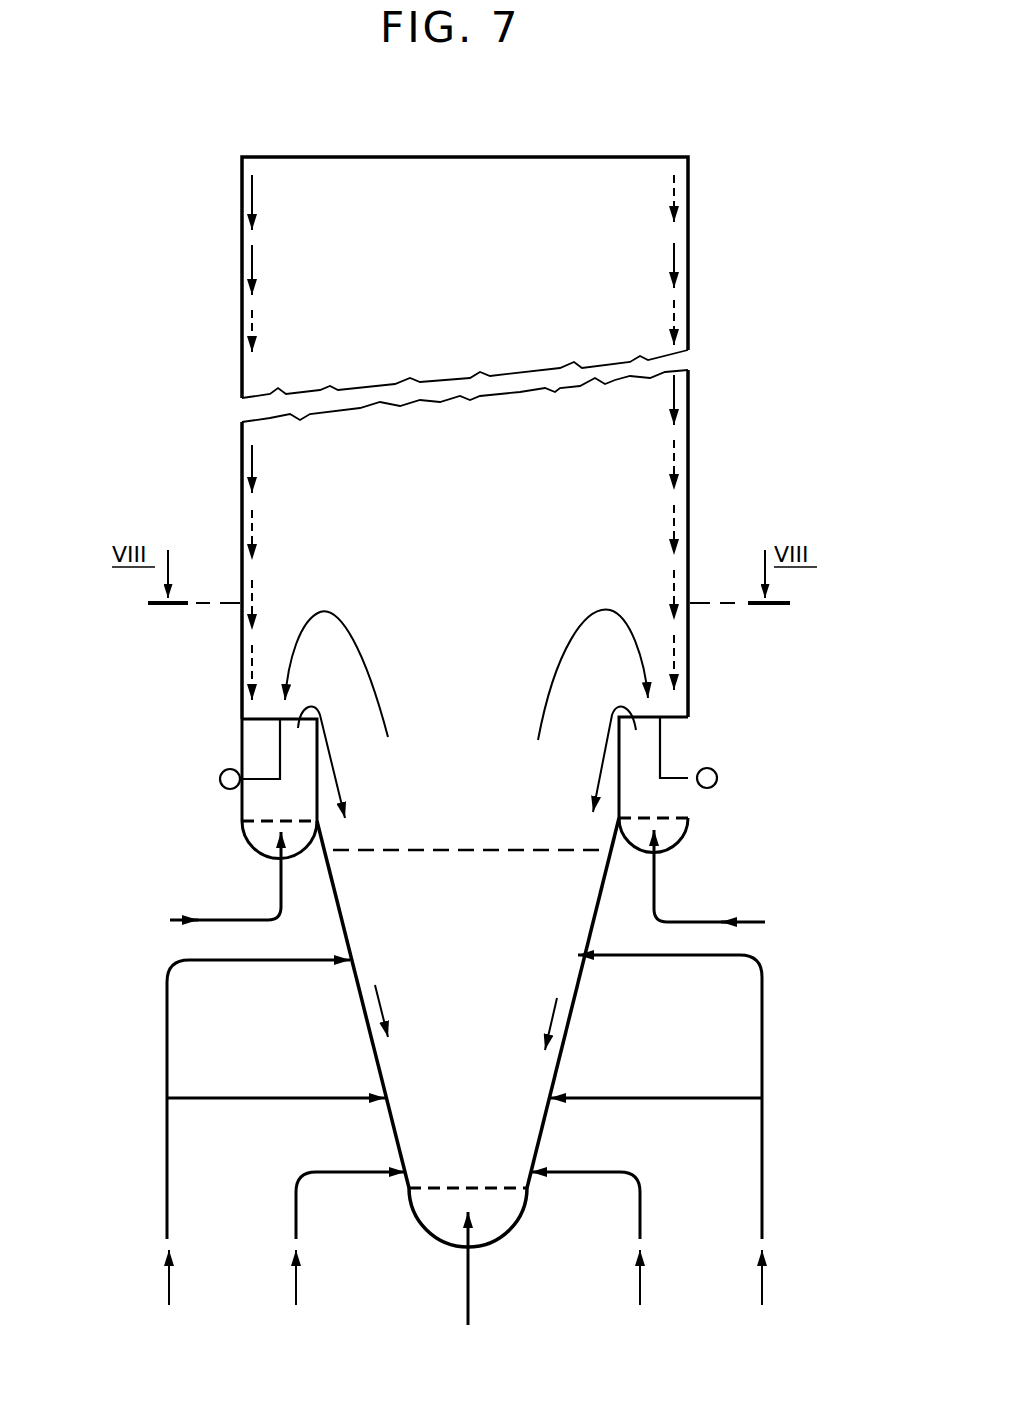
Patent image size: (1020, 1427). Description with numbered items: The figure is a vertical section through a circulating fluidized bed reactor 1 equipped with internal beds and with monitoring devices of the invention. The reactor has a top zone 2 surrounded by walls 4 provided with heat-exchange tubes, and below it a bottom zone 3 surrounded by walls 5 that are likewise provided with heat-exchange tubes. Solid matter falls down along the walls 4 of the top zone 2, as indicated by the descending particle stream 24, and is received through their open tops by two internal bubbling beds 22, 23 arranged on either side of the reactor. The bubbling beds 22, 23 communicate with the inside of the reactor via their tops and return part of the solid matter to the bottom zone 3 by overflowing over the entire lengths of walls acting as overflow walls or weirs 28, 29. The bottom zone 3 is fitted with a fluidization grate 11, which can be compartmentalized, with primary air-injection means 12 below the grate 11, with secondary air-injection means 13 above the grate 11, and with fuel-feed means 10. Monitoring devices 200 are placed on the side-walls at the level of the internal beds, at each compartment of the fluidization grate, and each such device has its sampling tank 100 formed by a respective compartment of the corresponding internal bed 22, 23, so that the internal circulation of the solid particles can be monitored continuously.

The combustion apparatus / reactor 1 is at (225, 323).
The top zone 2 is at (476, 481).
The bottom zone 3 is at (470, 1040).
The walls of the top zone 4 is at (238, 470).
The walls surrounding the bottom zone 5 is at (362, 1003).
The fuel-feed means 10 is at (296, 1187).
The fluidization grate 11 is at (455, 1185).
The primary air-injection means 12 is at (465, 1292).
The secondary air-injection means 13 is at (167, 1033).
The internal bubbling bed 22 is at (288, 800).
The internal bubbling bed 23 is at (683, 800).
The descending particle stream 24 is at (240, 517).
The overflow wall (weir) 28 is at (318, 780).
The overflow wall (weir) 29 is at (618, 768).
The sampling tank 100 is at (253, 742).
The monitoring device 200 is at (221, 774).